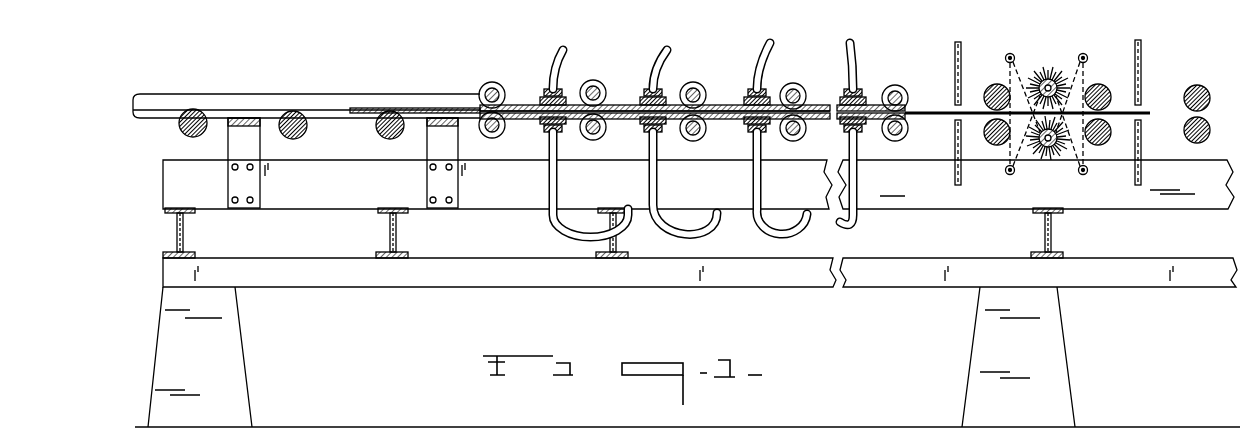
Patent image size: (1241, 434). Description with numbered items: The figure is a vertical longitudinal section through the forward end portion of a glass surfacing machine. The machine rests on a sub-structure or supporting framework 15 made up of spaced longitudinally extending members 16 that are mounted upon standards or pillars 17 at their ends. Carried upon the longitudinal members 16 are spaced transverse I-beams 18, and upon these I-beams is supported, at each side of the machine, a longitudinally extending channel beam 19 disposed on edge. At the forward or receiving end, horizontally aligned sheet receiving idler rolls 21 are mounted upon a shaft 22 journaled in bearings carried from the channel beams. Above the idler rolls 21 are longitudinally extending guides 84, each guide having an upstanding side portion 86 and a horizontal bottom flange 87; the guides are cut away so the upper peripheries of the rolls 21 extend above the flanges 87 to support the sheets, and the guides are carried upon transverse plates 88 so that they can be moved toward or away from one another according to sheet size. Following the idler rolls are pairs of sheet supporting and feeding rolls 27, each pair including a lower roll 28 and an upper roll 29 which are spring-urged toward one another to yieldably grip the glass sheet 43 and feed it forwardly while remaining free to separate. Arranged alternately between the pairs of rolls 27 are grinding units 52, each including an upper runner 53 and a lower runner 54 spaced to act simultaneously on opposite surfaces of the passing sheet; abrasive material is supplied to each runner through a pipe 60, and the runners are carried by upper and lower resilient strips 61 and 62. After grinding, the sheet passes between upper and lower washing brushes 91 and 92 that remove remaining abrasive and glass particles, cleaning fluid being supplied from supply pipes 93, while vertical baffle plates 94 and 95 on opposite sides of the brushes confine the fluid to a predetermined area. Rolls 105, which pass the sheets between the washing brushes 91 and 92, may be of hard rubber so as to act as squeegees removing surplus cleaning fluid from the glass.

The supporting framework 15 is at (687, 293).
The longitudinally extending members 16 is at (518, 272).
The standards or pillars 17 is at (243, 389).
The transverse I-beams 18 is at (398, 231).
The channel beam 19 is at (289, 212).
The sheet receiving idler rolls 21 is at (377, 129).
The shaft 22 is at (178, 130).
The sheet supporting and feeding rolls 27 is at (605, 80).
The lower roll 28 is at (786, 132).
The upper roll 29 is at (797, 91).
The glass sheet 43 is at (924, 118).
The grinding units 52 is at (524, 96).
The upper runner 53 is at (606, 103).
The lower runner 54 is at (598, 128).
The pipe 60 is at (551, 68).
The upper resilient strip 61 is at (561, 93).
The lower resilient strip 62 is at (545, 128).
The guide 84 is at (356, 103).
The upstanding side portion 86 is at (232, 95).
The horizontal bottom flange 87 is at (224, 112).
The transverse plates 88 is at (243, 143).
The upper washing brush 91 is at (1050, 78).
The lower washing brush 92 is at (1043, 158).
The supply pipes 93 is at (1007, 53).
The vertical baffle plate 94 is at (957, 82).
The vertical baffle plate 95 is at (1142, 147).
The rolls 105 is at (1110, 118).